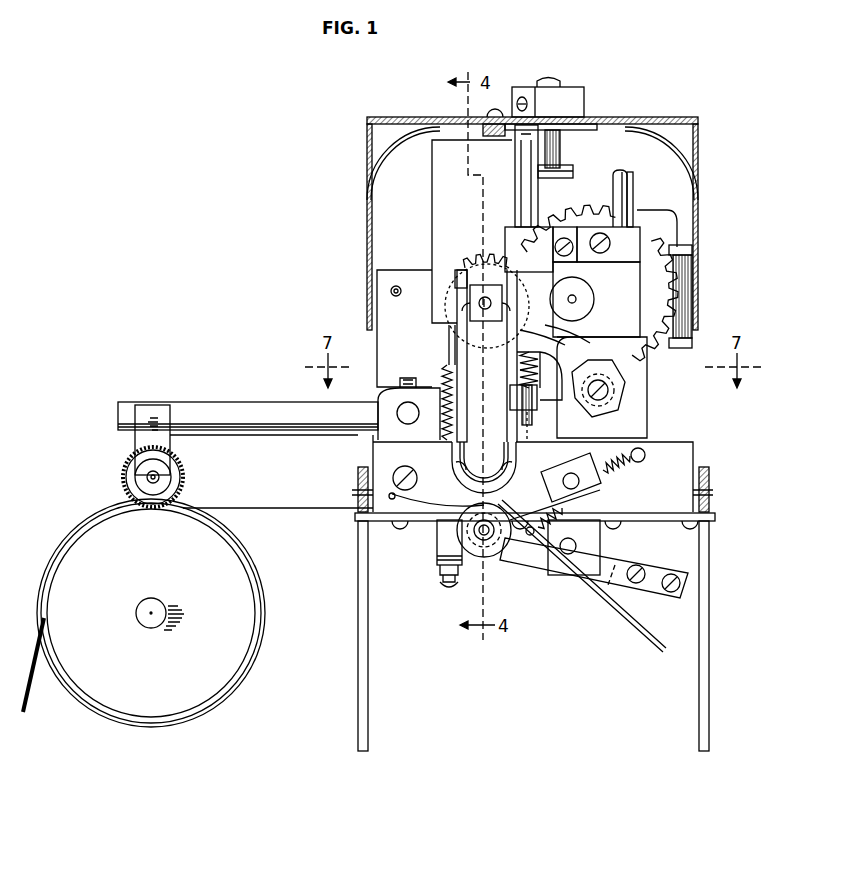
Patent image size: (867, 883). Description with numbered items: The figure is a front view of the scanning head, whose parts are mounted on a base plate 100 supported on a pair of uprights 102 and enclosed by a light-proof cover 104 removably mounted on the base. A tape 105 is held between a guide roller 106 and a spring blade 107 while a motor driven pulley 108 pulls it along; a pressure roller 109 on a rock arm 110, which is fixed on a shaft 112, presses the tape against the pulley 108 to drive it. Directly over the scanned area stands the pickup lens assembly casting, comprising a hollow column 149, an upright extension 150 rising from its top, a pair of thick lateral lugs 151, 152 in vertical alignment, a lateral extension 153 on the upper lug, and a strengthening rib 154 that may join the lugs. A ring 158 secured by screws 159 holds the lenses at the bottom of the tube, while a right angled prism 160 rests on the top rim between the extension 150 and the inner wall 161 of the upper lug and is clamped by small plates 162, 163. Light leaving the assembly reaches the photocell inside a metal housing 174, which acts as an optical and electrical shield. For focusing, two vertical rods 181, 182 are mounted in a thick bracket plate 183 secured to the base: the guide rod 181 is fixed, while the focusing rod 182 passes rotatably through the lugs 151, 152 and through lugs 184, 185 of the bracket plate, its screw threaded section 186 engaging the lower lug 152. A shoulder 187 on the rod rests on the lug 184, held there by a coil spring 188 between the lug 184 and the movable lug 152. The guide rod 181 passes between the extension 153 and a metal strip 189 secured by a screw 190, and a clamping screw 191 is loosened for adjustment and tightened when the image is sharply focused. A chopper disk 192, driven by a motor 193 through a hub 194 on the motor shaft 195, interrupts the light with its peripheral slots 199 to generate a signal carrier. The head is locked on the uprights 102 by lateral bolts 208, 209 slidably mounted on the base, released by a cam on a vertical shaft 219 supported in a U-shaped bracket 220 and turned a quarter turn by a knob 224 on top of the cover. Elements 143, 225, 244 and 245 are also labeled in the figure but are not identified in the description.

The base plate 100 is at (624, 512).
The uprights 102 is at (366, 708).
The light-proof cover 104 is at (690, 152).
The tape 105 is at (236, 506).
The guide roller 106 is at (492, 556).
The spring blade 107 is at (445, 500).
The motor driven pulley 108 is at (178, 702).
The pressure roller 109 is at (122, 482).
The rock arm 110 is at (226, 405).
The shaft 112 is at (372, 440).
The guide 143 is at (462, 470).
The hollow column 149 is at (462, 346).
The upright extension 150 is at (458, 276).
The upper lateral lug 151 is at (508, 232).
The lower lateral lug 152 is at (515, 398).
The lateral extension 153 is at (606, 250).
The strengthening rib 154 is at (548, 285).
The ring 158 is at (512, 463).
The screws 159 is at (490, 442).
The right angled prism 160 is at (470, 306).
The inner wall 161 is at (493, 255).
The small plate 162 is at (472, 265).
The small plate 163 is at (504, 320).
The metal housing 174 is at (432, 201).
The guide rod 181 is at (622, 174).
The focusing rod 182 is at (528, 170).
The bracket plate 183 is at (636, 410).
The upper lug 184 is at (584, 383).
The lower lug 185 is at (535, 430).
The screw threaded section 186 is at (522, 381).
The shoulder 187 is at (537, 332).
The coil spring 188 is at (520, 370).
The metal strip 189 is at (618, 233).
The screw 190 is at (556, 244).
The clamping screw 191 is at (604, 243).
The chopper disk 192 is at (645, 305).
The motor 193 is at (677, 273).
The hub 194 is at (590, 337).
The motor shaft 195 is at (576, 302).
The peripheral slots 199 is at (583, 206).
The lateral bolt 208 is at (710, 482).
The lateral bolt 209 is at (358, 482).
The vertical shaft 219 is at (552, 150).
The U-shaped bracket 220 is at (569, 178).
The knob 224 is at (565, 100).
The plate 225 is at (596, 123).
The screw 244 is at (488, 112).
The plate 245 is at (472, 231).